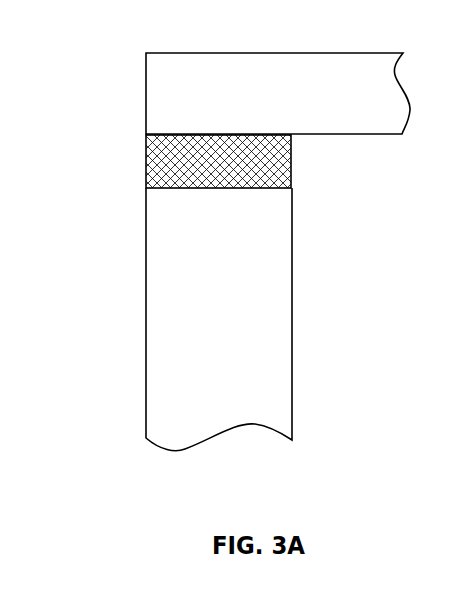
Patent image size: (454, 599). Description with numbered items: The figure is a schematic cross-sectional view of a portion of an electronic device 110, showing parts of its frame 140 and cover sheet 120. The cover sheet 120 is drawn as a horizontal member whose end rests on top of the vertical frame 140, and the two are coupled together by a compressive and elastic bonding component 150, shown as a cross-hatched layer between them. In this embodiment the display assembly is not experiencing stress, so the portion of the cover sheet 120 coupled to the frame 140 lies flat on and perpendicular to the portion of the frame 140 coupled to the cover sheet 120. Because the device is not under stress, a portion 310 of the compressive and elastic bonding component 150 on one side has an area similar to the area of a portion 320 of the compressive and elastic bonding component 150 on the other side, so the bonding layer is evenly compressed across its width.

The electronic device 110 is at (162, 472).
The cover sheet 120 is at (146, 53).
The frame 140 is at (146, 276).
The compressive and elastic bonding component 150 is at (146, 172).
The portion of the compressive and elastic bonding component 310 is at (141, 134).
The portion of the compressive and elastic bonding component 320 is at (295, 166).